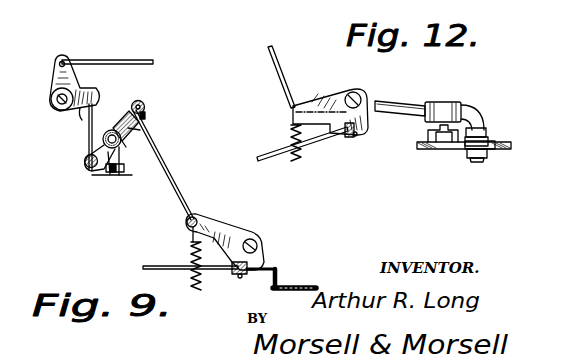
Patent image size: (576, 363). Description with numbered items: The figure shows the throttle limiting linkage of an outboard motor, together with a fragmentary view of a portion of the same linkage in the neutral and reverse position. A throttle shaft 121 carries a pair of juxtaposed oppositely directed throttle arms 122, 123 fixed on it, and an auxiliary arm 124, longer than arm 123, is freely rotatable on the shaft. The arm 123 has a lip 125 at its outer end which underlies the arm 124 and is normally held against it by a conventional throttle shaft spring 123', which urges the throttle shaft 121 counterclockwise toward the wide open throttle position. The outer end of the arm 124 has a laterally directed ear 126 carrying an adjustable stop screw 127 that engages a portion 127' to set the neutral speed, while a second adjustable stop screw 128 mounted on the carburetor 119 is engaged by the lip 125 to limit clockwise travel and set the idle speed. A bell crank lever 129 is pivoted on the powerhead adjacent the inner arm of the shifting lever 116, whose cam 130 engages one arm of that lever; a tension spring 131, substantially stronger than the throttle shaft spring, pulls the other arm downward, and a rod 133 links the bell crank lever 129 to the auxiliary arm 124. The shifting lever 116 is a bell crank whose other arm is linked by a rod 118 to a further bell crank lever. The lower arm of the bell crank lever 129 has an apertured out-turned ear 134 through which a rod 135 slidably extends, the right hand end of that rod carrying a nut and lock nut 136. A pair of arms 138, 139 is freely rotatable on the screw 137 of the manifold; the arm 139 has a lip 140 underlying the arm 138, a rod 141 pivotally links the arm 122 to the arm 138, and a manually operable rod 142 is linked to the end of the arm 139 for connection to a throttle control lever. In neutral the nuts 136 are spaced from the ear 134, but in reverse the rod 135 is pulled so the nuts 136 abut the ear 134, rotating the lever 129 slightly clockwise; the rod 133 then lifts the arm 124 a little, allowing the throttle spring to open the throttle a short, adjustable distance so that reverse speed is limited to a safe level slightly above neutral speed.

In FIG. 12, the shifting lever 116 is at (496, 150).
In FIG. 12, the rod 118 is at (407, 104).
In FIG. 9, the carburetor 119 is at (112, 182).
In FIG. 9, the throttle shaft 121 is at (110, 130).
In FIG. 9, the throttle arm 122 is at (96, 177).
In FIG. 9, the throttle arm 123 is at (131, 102).
In FIG. 9, the throttle shaft spring 123' is at (138, 148).
In FIG. 9, the auxiliary arm 124 is at (142, 103).
In FIG. 9, the lip 125 is at (141, 130).
In FIG. 9, the ear 126 is at (146, 106).
In FIG. 9, the adjustable stop screw 127 is at (159, 118).
In FIG. 9, the portion 127' is at (136, 169).
In FIG. 9, the second adjustable stop screw 128 is at (126, 173).
In FIG. 9, the bell crank lever 129 is at (228, 229).
In FIG. 12, the bell crank lever 129 is at (300, 122).
In FIG. 9, the cam 130 is at (259, 273).
In FIG. 12, the cam 130 is at (443, 143).
In FIG. 9, the tension spring 131 is at (195, 282).
In FIG. 12, the tension spring 131 is at (302, 158).
In FIG. 9, the rod 133 is at (170, 179).
In FIG. 12, the rod 133 is at (279, 58).
In FIG. 9, the ear 134 is at (234, 266).
In FIG. 12, the ear 134 is at (350, 138).
In FIG. 9, the rod 135 is at (166, 265).
In FIG. 12, the rod 135 is at (280, 163).
In FIG. 9, the nut and lock nut 136 is at (240, 280).
In FIG. 12, the nut and lock nut 136 is at (358, 135).
In FIG. 9, the screw 137 is at (52, 99).
In FIG. 9, the arm 138 is at (85, 94).
In FIG. 9, the arm 139 is at (57, 68).
In FIG. 9, the lip 140 is at (82, 118).
In FIG. 9, the rod 141 is at (93, 104).
In FIG. 9, the manually operable rod 142 is at (130, 61).